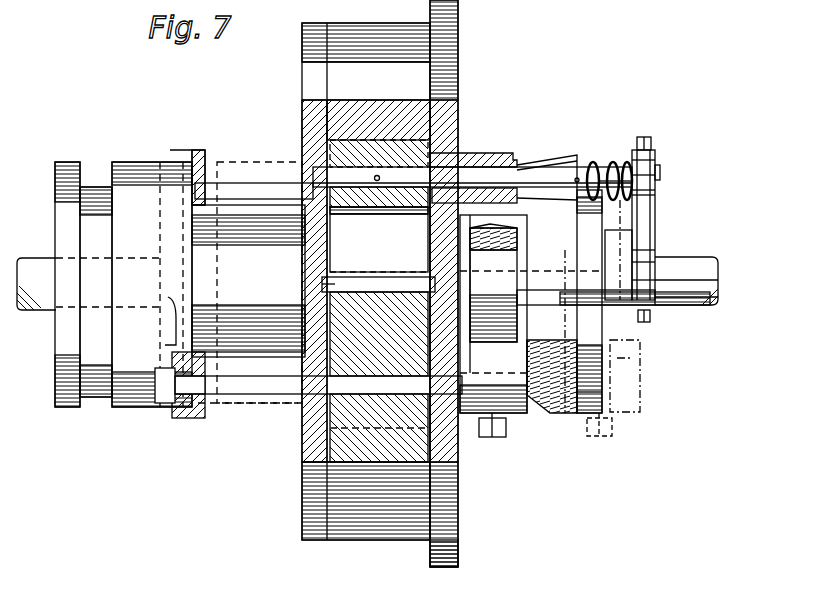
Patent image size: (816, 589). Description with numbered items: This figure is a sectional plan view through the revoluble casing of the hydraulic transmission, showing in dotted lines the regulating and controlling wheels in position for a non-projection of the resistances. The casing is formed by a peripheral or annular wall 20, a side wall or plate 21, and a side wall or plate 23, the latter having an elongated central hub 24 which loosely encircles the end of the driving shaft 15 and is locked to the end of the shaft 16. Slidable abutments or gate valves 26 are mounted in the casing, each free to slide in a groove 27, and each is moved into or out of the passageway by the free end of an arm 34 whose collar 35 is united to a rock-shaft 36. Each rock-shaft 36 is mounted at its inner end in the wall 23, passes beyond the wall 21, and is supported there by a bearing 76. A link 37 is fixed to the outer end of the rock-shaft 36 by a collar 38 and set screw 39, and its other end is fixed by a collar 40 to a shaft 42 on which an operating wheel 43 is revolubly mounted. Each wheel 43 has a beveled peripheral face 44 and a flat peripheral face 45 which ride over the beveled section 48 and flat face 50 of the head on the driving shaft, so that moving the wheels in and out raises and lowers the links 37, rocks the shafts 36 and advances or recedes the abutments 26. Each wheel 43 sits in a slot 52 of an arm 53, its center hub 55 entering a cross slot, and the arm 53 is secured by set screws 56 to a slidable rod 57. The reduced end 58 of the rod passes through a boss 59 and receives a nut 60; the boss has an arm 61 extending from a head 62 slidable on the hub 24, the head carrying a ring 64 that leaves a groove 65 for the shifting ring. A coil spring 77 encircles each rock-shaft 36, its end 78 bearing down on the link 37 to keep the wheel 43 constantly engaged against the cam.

The shaft 15 is at (716, 283).
The shaft 16 is at (88, 284).
The peripheral or annular wall 20 is at (416, 72).
The side wall or plate 21 is at (460, 56).
The side wall or plate 23 is at (305, 87).
The elongated central hub 24 is at (248, 281).
The abutment or gate valve 26 is at (378, 283).
The groove 27 is at (322, 283).
The arm 34 is at (379, 239).
The collar 35 is at (372, 205).
The rock-shaft 36 is at (489, 178).
The link 37 is at (642, 222).
The collar 38 is at (655, 163).
The set screw 39 is at (652, 143).
The collar 40 is at (650, 318).
The shaft 42 is at (549, 291).
The operating wheel 43 is at (505, 246).
The beveled peripheral face 44 is at (515, 237).
The flat peripheral face 45 is at (492, 232).
The beveled section 48 is at (547, 405).
The flat peripheral face 50 is at (590, 392).
The slot 52 is at (572, 343).
The arm 53 is at (652, 358).
The center hub 55 is at (435, 567).
The set screw 56 is at (497, 437).
The slidable rod 57 is at (268, 176).
The reduced end 58 is at (205, 405).
The boss 59 is at (203, 155).
The nut 60 is at (165, 403).
The arm 61 is at (190, 343).
The head 62 is at (152, 284).
The ring 64 is at (52, 284).
The groove 65 is at (97, 180).
The bearing 76 is at (478, 153).
The coil spring 77 is at (600, 162).
The end of coil spring 78 is at (610, 165).